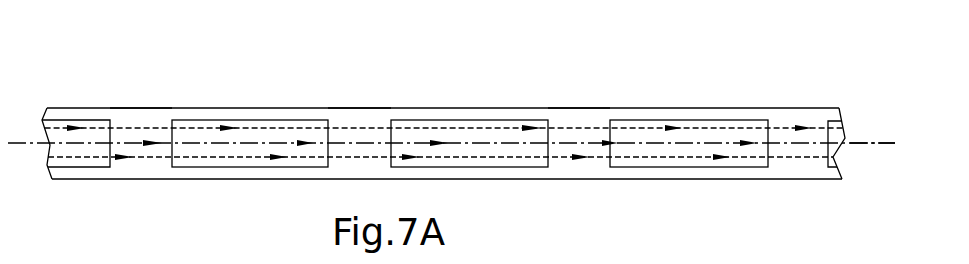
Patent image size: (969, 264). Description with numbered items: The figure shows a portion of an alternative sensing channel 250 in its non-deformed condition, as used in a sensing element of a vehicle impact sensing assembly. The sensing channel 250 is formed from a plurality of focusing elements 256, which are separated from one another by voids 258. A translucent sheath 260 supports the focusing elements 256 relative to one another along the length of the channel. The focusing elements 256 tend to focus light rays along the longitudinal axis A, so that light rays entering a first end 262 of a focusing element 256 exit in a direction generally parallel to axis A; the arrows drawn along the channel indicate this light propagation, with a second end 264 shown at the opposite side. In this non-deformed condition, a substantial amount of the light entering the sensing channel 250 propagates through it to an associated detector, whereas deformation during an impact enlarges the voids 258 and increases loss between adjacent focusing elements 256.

The sensing channel 250 is at (206, 64).
The focusing elements 256 is at (97, 123).
The voids 258 is at (153, 148).
The translucent sheath 260 is at (355, 113).
The first end 262 is at (384, 122).
The lower flow path 264 is at (548, 167).
The axis A is at (868, 143).